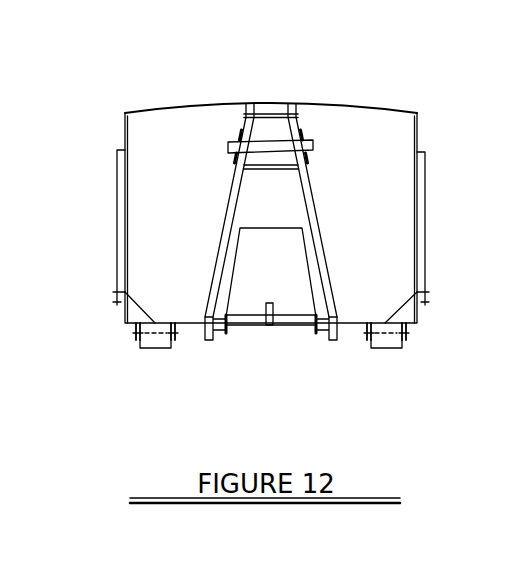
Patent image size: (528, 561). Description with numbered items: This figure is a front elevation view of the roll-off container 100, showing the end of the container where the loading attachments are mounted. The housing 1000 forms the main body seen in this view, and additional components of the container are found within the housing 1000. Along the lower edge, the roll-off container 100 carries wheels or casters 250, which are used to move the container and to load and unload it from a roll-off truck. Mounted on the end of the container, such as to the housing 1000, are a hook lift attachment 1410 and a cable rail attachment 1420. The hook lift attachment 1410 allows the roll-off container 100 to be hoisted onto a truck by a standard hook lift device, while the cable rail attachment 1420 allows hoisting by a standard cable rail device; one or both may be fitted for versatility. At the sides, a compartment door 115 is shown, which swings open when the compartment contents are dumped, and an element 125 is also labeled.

The roll-off container 100 is at (410, 90).
The housing 1000 is at (360, 203).
The left side panel 125 is at (117, 243).
The compartment door 115 is at (425, 243).
The hook lift attachment 1410 is at (273, 140).
The cable rail attachment 1420 is at (270, 326).
The wheels or casters 250 is at (140, 348).